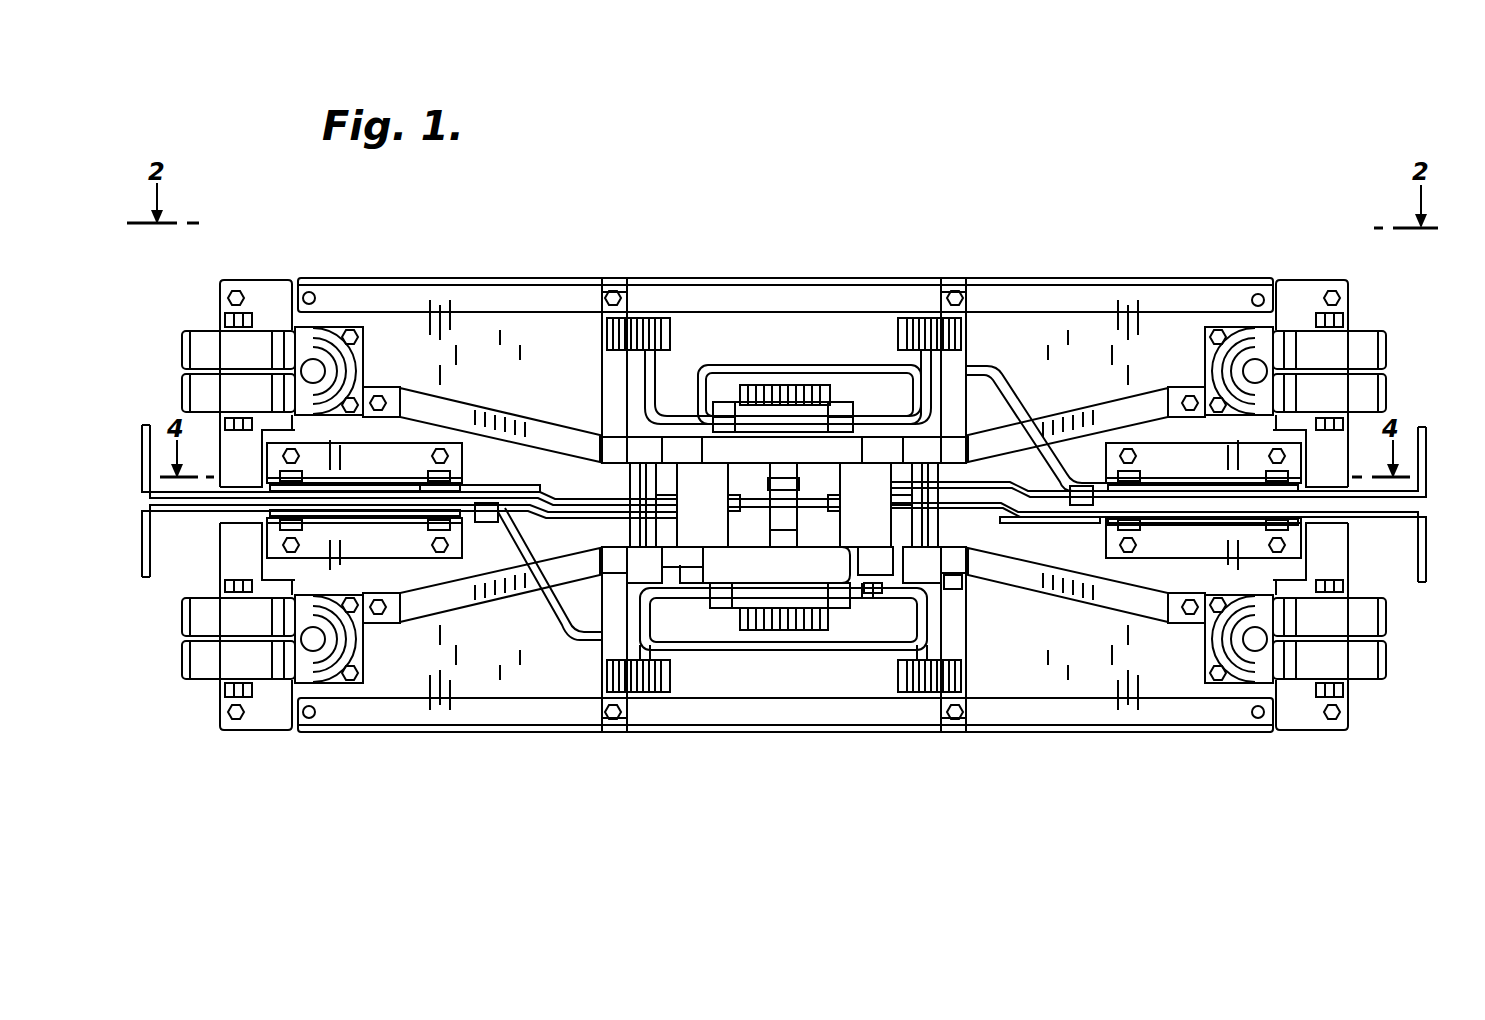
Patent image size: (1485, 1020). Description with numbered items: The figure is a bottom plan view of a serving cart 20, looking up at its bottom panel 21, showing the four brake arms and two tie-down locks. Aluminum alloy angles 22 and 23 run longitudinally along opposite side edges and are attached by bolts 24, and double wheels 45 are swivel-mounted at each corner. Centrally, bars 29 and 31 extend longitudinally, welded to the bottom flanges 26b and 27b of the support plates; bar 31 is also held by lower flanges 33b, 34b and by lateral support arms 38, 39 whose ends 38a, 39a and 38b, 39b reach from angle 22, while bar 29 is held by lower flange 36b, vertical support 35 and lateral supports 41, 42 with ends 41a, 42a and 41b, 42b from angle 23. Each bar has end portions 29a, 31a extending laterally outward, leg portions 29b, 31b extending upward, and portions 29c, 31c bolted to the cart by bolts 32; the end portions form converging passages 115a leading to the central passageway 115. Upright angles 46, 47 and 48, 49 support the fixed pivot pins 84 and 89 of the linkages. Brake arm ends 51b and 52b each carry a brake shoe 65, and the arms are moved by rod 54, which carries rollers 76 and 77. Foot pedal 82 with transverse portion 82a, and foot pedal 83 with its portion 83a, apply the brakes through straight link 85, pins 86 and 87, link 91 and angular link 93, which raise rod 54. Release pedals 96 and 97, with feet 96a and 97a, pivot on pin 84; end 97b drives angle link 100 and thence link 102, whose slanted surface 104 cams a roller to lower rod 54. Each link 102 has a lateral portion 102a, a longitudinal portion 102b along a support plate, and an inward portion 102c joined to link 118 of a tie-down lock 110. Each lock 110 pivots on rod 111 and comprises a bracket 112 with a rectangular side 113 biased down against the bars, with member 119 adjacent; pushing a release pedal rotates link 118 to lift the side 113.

The cart 20 is at (784, 501).
The bottom panel 21 is at (1113, 353).
The aluminum alloy angle 22 is at (780, 278).
The aluminum alloy angle 23 is at (1138, 735).
The bolts 24 is at (312, 292).
The double wheels 45 is at (182, 345).
The lateral support arm 38 is at (610, 362).
The lateral support arm 39 is at (965, 360).
The lateral support 41 is at (600, 653).
The lateral support 42 is at (955, 640).
The post end 38a is at (612, 289).
The post end 39a is at (953, 290).
The post end 41a is at (612, 734).
The post end 42a is at (948, 734).
The post inner end 38b is at (613, 452).
The post inner end 39b is at (953, 452).
The post inner end 41b is at (610, 555).
The post inner end 42b is at (963, 568).
The brake shoe 65 is at (598, 333).
The end portion 31a is at (457, 413).
The leg portion 31b is at (390, 392).
The portion 31c is at (378, 418).
The end portion 29a is at (507, 593).
The leg portion 29b is at (390, 595).
The portion 29c is at (367, 617).
The bar 29 is at (692, 580).
The bar 31 is at (688, 443).
The bolts 32 is at (377, 397).
The converging passages 115a is at (518, 460).
The upright extruded aluminum alloy angle 48 is at (315, 462).
The upright extruded aluminum alloy angle 49 is at (332, 547).
The upright extruded aluminum alloy angle 46 is at (1245, 450).
The upright extruded aluminum alloy angle 47 is at (1182, 530).
The straight link 85 is at (358, 492).
The fixed pivot pin 84 is at (283, 530).
The angle link 100 is at (1143, 483).
The pivot pin 86 is at (280, 480).
The pin 87 is at (457, 477).
The fixed pivot pin 89 is at (1120, 468).
The end 97b is at (1202, 493).
The link 91 is at (533, 490).
The foot pedal 82 is at (142, 455).
The transverse portion 82a is at (143, 426).
The pedal 96 is at (206, 514).
The laterally extending foot 96a is at (153, 577).
The pedal 97 is at (1430, 490).
The laterally extending foot 97a is at (1460, 410).
The foot pedal 83 is at (1430, 556).
The rod bracket end 83a is at (1432, 583).
The link 102 is at (585, 516).
The lateral extension portion 102a is at (498, 530).
The longitudinal portion 102b is at (743, 366).
The inwardly extending portion 102c is at (695, 378).
The lower flange 34b is at (642, 442).
The lower flange 33b is at (925, 450).
The lower flange 36b is at (640, 570).
The vertical support 35 is at (962, 607).
The rod 111 is at (657, 460).
The passageway 115 is at (757, 472).
The tie-down lock 110 is at (706, 542).
The slanted surface 104 is at (792, 527).
The roller 77 is at (772, 487).
The roller 76 is at (797, 522).
The angular link 93 is at (732, 503).
The rectangular side 113 is at (710, 532).
The bracket 112 is at (638, 490).
The end 51b is at (653, 365).
The end 52b is at (917, 362).
The rod 54 is at (780, 387).
The bottom flange 27b is at (850, 447).
The bottom flange 26b is at (727, 575).
The link 118 is at (953, 585).
The nut 119 is at (873, 593).